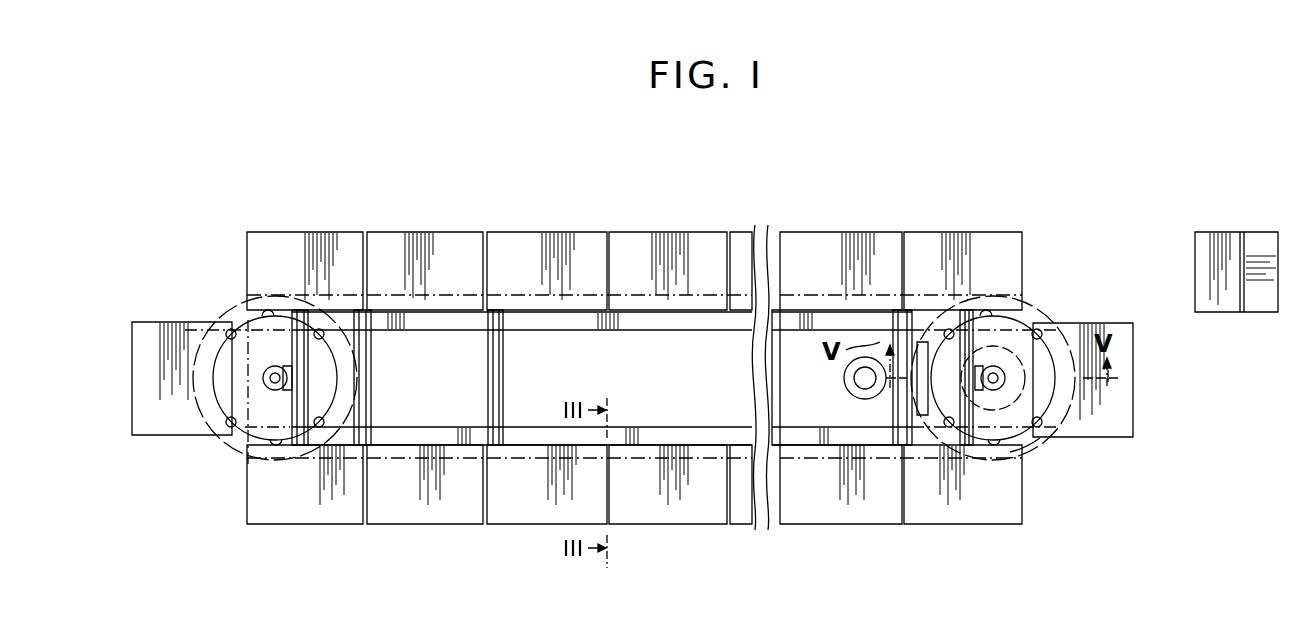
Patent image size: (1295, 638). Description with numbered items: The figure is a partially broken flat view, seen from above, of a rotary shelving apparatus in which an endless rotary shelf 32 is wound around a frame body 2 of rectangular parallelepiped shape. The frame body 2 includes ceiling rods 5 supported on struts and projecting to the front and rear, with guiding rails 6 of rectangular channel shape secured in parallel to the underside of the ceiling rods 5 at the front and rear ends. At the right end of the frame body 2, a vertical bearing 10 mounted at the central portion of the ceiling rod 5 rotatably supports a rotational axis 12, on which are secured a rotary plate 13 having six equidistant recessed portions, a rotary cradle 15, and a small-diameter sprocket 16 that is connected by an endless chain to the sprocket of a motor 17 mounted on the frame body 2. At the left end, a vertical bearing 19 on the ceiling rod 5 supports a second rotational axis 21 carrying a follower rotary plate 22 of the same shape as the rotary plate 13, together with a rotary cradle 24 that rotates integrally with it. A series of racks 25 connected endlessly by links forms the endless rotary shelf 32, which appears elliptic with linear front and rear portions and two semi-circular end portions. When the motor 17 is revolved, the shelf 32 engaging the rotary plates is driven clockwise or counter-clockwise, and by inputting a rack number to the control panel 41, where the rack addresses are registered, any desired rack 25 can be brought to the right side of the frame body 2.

The frame body 2 is at (451, 302).
The ceiling rods 5 is at (368, 380).
The guiding rails 6 is at (548, 311).
The vertical bearing 10 is at (980, 368).
The rotational axis 12 is at (998, 374).
The rotary plate 13 is at (1012, 432).
The rotary cradle 15 is at (1023, 316).
The sprocket 16 is at (1040, 436).
The motor 17 is at (851, 390).
The vertical bearing 19 is at (290, 366).
The rotational axis 21 is at (280, 390).
The follower rotary plate 22 is at (336, 384).
The rotary cradle 24 is at (245, 318).
The rack 25 is at (330, 232).
The endless rotary shelf 32 is at (966, 527).
The control panel 41 is at (1250, 232).